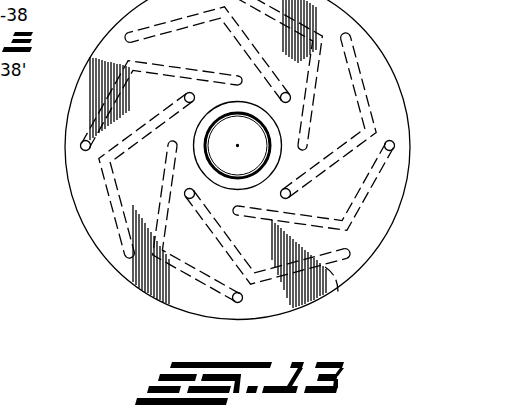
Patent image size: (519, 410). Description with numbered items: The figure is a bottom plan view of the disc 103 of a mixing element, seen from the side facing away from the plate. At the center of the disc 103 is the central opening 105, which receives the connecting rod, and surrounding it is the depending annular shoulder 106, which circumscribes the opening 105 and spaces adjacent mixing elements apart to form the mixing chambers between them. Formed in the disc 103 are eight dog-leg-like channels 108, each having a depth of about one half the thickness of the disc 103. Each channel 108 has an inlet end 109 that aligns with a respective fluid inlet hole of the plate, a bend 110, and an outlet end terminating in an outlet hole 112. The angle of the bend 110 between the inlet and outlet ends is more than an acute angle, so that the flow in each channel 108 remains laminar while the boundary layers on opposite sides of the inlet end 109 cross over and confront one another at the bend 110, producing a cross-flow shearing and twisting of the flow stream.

The disc 103 is at (69, 181).
The central opening 105 is at (213, 128).
The annular shoulder 106 is at (282, 157).
The dog-leg-like channel 108 is at (339, 290).
The inlet end 109 is at (348, 253).
The bend 110 is at (254, 284).
The outlet hole 112 is at (187, 198).